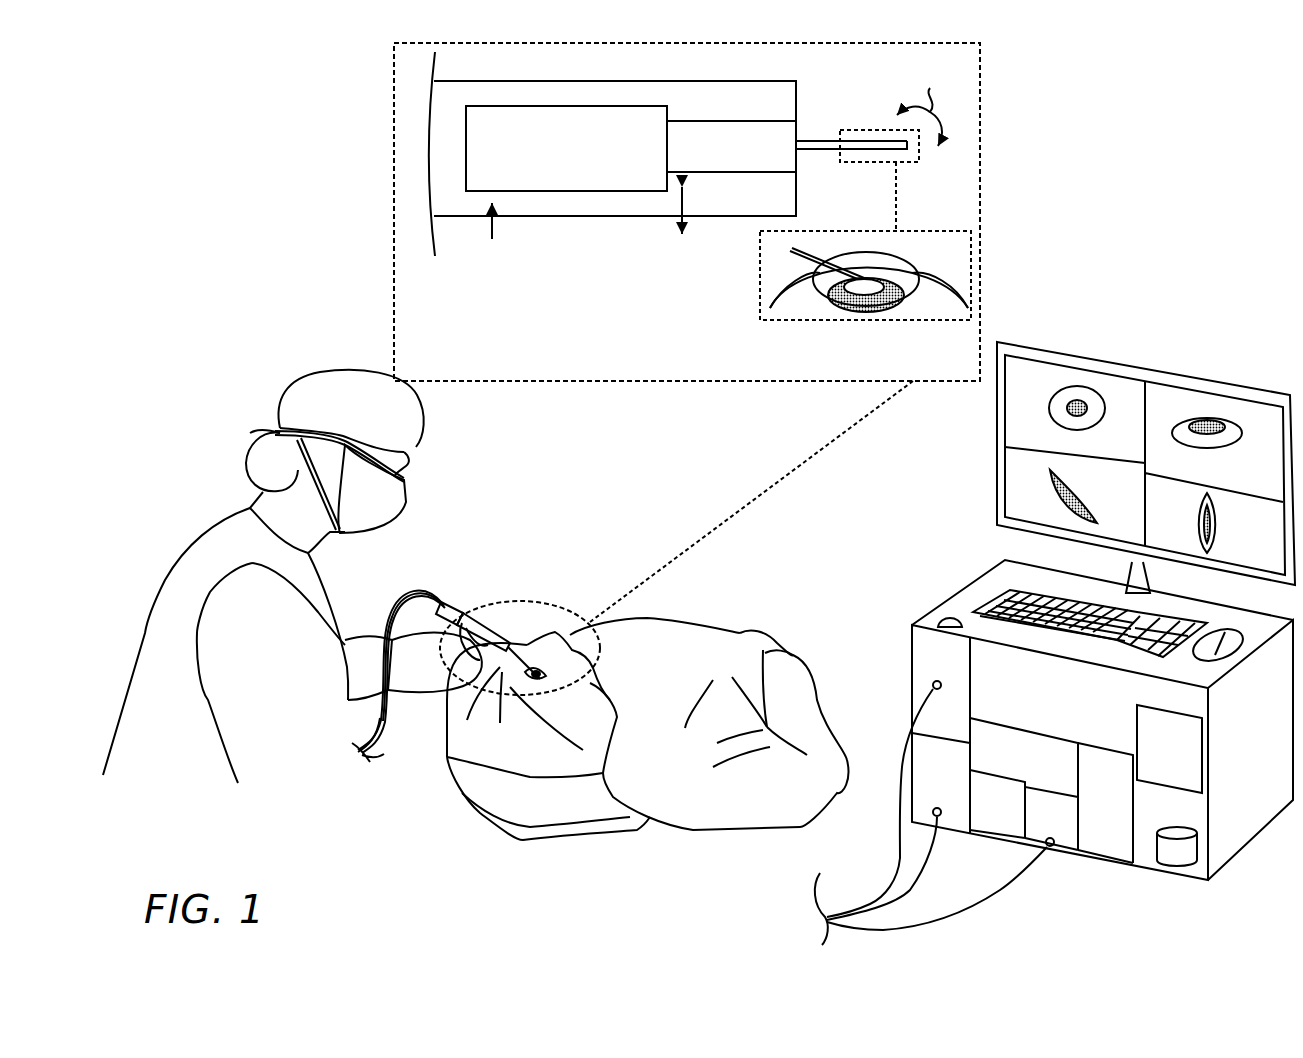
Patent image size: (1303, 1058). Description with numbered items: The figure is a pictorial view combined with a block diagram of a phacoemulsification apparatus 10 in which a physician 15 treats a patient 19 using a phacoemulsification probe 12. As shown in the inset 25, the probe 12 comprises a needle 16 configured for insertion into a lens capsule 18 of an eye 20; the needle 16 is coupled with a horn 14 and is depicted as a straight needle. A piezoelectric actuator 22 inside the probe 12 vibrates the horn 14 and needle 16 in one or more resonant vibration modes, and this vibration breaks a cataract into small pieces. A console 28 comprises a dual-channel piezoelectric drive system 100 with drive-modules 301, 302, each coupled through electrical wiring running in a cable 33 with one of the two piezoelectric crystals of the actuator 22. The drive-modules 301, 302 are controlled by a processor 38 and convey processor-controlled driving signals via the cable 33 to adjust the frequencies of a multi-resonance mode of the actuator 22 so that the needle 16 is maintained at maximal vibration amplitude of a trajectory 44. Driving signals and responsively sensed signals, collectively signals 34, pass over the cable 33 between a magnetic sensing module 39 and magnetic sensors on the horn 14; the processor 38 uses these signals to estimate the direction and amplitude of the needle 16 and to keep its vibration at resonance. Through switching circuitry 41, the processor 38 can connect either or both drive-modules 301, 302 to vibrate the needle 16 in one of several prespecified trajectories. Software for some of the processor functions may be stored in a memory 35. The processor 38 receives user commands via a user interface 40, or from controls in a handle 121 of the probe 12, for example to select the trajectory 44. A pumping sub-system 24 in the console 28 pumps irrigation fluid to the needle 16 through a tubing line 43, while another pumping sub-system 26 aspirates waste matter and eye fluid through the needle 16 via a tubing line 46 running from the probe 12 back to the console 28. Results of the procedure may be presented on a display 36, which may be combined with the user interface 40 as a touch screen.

The phacoemulsification apparatus 10 is at (1222, 278).
The phacoemulsification probe 12 is at (796, 101).
The horn 14 is at (719, 161).
The physician 15 is at (280, 403).
The needle 16 is at (861, 266).
The lens capsule 18 is at (838, 301).
The patient 19 is at (532, 762).
The eye 20 is at (950, 262).
The piezoelectric actuator 22 is at (485, 106).
The pumping sub-system 24 is at (951, 666).
The inset 25 is at (400, 375).
The pumping sub-system 26 is at (951, 780).
The console 28 is at (1250, 828).
The drive-module 301 is at (1010, 816).
The drive-module 302 is at (1065, 828).
The cable 33 is at (400, 594).
The signals 34 is at (685, 240).
The memory 35 is at (1177, 862).
The display 36 is at (997, 399).
The processor 38 is at (1183, 763).
The magnetic sensing module 39 is at (1121, 815).
The user interface 40 is at (955, 580).
The switching circuitry 41 is at (1023, 771).
The tubing line 43 is at (388, 727).
The trajectory 44 is at (921, 102).
The tubing line 46 is at (420, 588).
The dual-channel piezoelectric drive system 100 is at (1106, 922).
The handle 121 is at (454, 603).